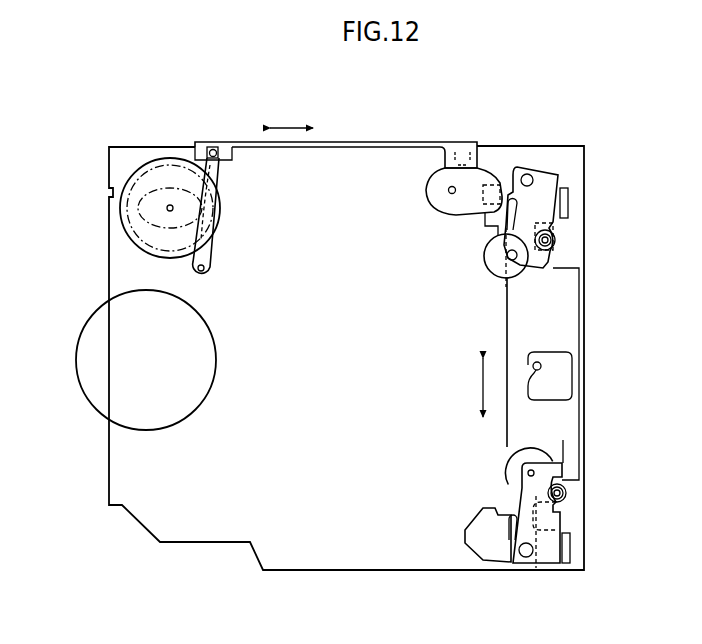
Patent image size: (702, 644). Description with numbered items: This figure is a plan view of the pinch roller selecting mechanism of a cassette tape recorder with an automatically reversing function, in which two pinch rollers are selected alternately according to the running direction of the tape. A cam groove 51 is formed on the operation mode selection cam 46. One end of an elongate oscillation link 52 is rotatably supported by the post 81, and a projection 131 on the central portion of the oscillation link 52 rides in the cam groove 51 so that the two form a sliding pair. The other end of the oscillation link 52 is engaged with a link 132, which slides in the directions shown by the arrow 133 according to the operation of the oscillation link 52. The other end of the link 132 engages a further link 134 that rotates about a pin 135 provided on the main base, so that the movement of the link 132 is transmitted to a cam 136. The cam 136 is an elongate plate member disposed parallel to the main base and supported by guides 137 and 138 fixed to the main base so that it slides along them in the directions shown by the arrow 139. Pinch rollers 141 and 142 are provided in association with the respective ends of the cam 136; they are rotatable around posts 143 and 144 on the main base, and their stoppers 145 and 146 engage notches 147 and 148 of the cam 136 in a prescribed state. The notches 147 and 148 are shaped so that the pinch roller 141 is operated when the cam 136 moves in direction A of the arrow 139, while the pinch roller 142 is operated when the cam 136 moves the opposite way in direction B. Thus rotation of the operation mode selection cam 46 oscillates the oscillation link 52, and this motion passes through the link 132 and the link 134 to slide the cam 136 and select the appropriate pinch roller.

The operation mode selection cam 46 is at (128, 240).
The cam groove 51 is at (152, 180).
The oscillation link 52 is at (216, 255).
The post 81 is at (208, 272).
The projection 131 is at (205, 207).
The link 132 is at (350, 141).
The arrow 133 is at (292, 125).
The link 134 is at (440, 186).
The pin 135 is at (449, 194).
The cam 136 is at (520, 325).
The guide 137 is at (486, 228).
The guide 138 is at (512, 514).
The arrow 139 is at (482, 388).
The pinch roller 141 is at (495, 265).
The pinch roller 142 is at (503, 466).
The post 143 is at (532, 167).
The post 144 is at (533, 560).
The stopper 145 is at (553, 246).
The stopper 146 is at (566, 493).
The notch 147 is at (566, 231).
The notch 148 is at (568, 503).